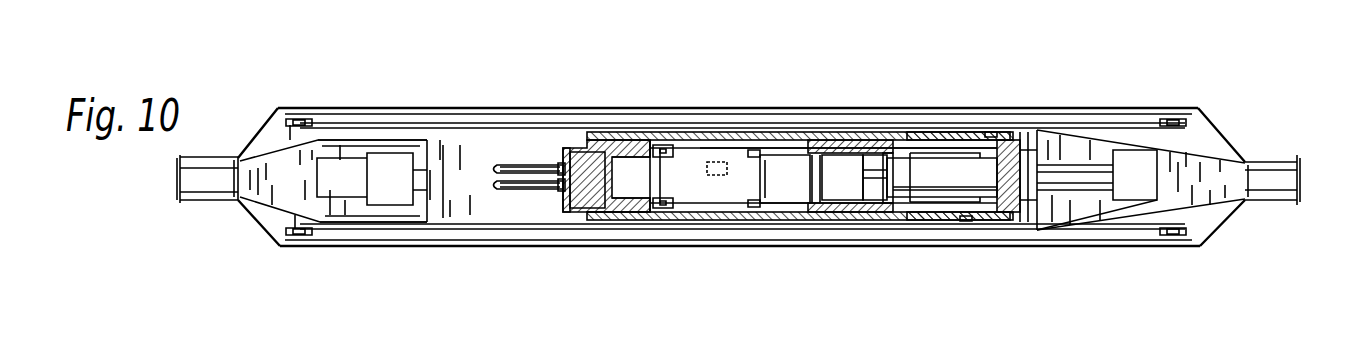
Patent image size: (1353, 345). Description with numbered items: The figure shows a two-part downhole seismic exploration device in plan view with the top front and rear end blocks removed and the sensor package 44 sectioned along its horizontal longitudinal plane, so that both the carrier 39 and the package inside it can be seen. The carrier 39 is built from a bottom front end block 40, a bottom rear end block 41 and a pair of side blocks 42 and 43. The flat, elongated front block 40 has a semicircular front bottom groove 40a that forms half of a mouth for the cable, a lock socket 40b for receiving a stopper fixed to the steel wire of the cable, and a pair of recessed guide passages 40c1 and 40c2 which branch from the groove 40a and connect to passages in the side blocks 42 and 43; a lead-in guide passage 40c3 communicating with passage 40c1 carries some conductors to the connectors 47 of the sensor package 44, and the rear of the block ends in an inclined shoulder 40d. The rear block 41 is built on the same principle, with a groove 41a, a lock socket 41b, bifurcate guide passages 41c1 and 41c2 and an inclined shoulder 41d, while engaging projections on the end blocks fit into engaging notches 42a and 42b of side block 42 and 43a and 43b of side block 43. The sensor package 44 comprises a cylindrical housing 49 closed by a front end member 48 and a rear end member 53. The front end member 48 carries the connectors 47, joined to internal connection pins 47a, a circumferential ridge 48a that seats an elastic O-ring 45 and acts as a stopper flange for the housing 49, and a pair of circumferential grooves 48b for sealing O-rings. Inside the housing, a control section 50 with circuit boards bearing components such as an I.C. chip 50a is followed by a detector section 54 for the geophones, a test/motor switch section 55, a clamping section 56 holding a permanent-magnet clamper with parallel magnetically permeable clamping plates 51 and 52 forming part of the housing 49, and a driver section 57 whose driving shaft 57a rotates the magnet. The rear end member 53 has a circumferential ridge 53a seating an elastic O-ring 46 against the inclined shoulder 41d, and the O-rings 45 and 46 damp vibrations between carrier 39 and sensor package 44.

The carrier 39 is at (1066, 108).
The bottom front end block 40 is at (236, 135).
The front bottom groove 40a is at (196, 197).
The lock socket 40b is at (409, 191).
The recessed guide passage 40c1 is at (321, 140).
The recessed guide passage 40c2 is at (352, 226).
The lead-in guide passage 40c3 is at (428, 138).
The inclined shoulder 40d is at (572, 142).
The bottom rear end block 41 is at (1240, 138).
The groove 41a is at (1298, 165).
The lock socket 41b is at (1135, 160).
The bifurcate guide passage 41c1 is at (1143, 140).
The bifurcate guide passage 41c2 is at (1140, 215).
The inclined shoulder 41d is at (1012, 150).
The side block 42 is at (495, 108).
The engaging notch 42a is at (292, 119).
The engaging notch 42b is at (1195, 114).
The side block 43 is at (430, 247).
The engaging notch 43a is at (296, 246).
The engaging notch 43b is at (1202, 247).
The sensor package 44 is at (760, 132).
The elastic O-ring 45 is at (586, 214).
The elastic O-ring 46 is at (1007, 215).
The connectors 47 is at (532, 200).
The internal connection pins 47a is at (640, 133).
The front end member 48 is at (566, 207).
The circumferential ridge 48a is at (596, 138).
The circumferential grooves 48b is at (656, 210).
The cylindrical housing 49 is at (682, 132).
The control section 50 is at (726, 205).
The I.C. chip 50a is at (712, 140).
The clamping plate 51 is at (846, 150).
The clamping plate 52 is at (868, 203).
The rear end member 53 is at (1015, 214).
The circumferential ridge 53a is at (990, 132).
The detector section 54 is at (797, 153).
The test/motor switch section 55 is at (815, 205).
The clamping section 56 is at (843, 203).
The driver section 57 is at (930, 165).
The driving shaft 57a is at (880, 152).